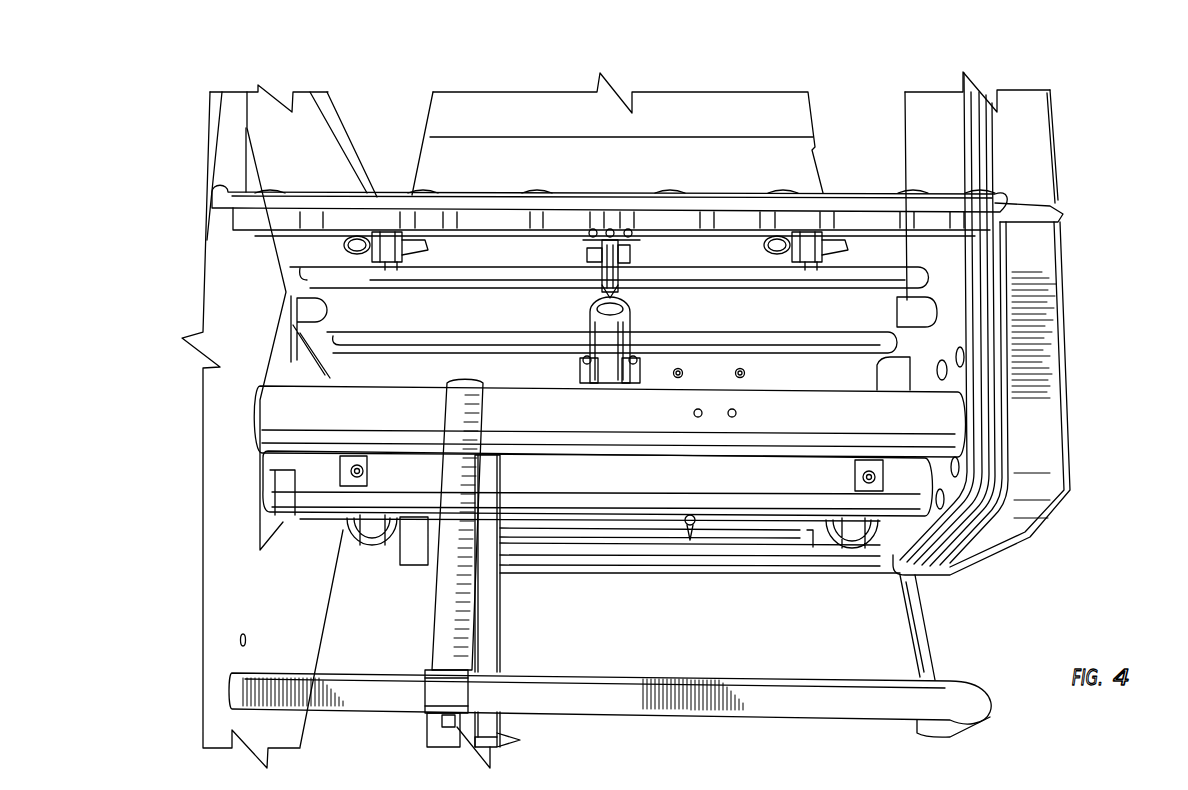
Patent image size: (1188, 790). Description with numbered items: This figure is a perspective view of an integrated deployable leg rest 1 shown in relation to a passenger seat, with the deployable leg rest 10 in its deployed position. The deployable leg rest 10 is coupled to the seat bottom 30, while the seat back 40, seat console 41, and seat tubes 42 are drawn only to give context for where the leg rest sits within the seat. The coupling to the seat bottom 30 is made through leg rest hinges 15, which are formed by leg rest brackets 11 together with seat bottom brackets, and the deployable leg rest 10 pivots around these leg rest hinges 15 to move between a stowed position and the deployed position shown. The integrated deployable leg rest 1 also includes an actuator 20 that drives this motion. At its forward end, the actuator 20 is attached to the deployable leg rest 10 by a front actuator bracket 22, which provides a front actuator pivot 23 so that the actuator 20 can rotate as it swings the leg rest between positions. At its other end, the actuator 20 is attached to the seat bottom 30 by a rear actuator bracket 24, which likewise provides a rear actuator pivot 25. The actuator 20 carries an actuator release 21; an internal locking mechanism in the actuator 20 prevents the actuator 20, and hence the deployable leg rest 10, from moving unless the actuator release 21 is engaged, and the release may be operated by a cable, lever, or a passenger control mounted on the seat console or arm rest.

The integrated deployable leg rest 1 is at (1043, 61).
The deployable leg rest 10 is at (862, 223).
The leg rest brackets 11 is at (375, 230).
The leg rest hinges 15 is at (397, 230).
The actuator 20 is at (617, 378).
The actuator release 21 is at (596, 298).
The front actuator bracket 22 is at (603, 290).
The front actuator pivot 23 is at (634, 238).
The rear actuator bracket 24 is at (637, 375).
The rear actuator pivot 25 is at (598, 380).
The seat bottom 30 is at (927, 253).
The seat back 40 is at (727, 110).
The seat console 41 is at (1043, 303).
The seat tubes 42 is at (940, 425).